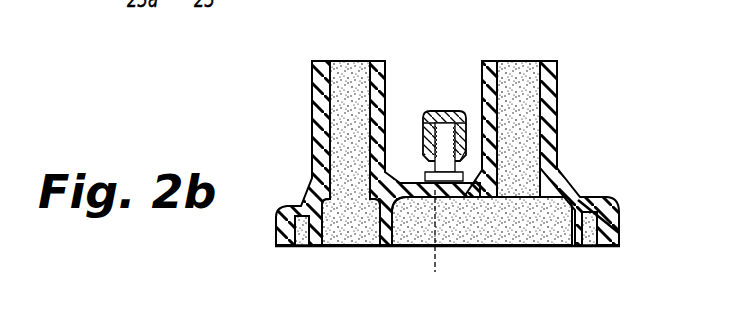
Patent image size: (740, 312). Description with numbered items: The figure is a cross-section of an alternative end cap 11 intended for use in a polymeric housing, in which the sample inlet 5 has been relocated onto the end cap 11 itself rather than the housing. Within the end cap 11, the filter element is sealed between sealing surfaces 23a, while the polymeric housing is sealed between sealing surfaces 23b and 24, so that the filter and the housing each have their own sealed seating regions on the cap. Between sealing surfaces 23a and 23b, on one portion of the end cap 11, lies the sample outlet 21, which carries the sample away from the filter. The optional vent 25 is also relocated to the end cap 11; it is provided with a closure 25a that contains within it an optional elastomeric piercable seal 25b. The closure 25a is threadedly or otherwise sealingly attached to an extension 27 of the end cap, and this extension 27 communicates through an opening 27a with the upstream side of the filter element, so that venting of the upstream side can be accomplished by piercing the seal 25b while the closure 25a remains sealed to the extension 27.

The end cap 11 is at (632, 100).
The sample inlet 5 is at (322, 59).
The sample outlet 21 is at (547, 59).
The sealing surfaces 23a is at (408, 244).
The sealing surfaces 23b is at (325, 246).
The sealing surfaces 24 is at (302, 246).
The vent 25 is at (444, 96).
The closure 25a is at (461, 111).
The elastomeric piercable seal 25b is at (430, 112).
The extension 27 is at (480, 197).
The opening 27a is at (437, 246).